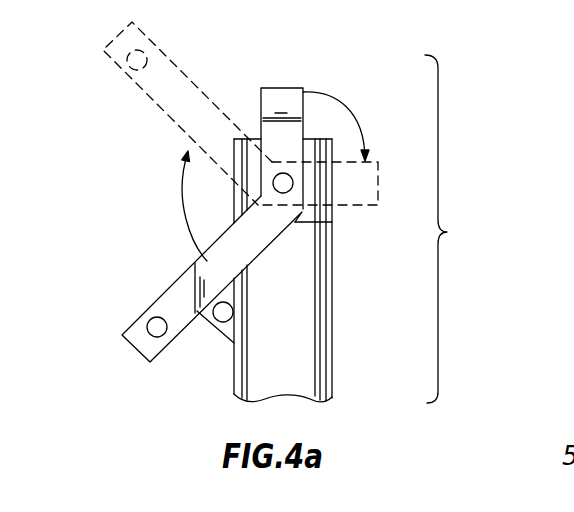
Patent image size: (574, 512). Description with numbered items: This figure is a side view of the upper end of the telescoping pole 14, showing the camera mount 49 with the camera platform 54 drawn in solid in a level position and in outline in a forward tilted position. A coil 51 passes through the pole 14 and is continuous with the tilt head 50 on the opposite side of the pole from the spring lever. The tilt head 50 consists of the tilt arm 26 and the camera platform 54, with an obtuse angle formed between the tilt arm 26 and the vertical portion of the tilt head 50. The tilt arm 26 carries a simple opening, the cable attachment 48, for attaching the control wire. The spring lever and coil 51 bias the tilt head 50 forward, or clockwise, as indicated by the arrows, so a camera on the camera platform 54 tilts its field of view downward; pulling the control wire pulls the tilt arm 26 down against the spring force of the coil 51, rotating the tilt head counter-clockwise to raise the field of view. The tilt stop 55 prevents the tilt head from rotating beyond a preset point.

The pole 14 is at (314, 372).
The tilt arm 26 is at (212, 262).
The cable attachment 48 is at (148, 320).
The camera mount 49 is at (447, 232).
The tilt head 50 is at (292, 100).
The coil 51 is at (291, 191).
The camera platform 54 is at (282, 87).
The tilt stop 55 is at (216, 325).